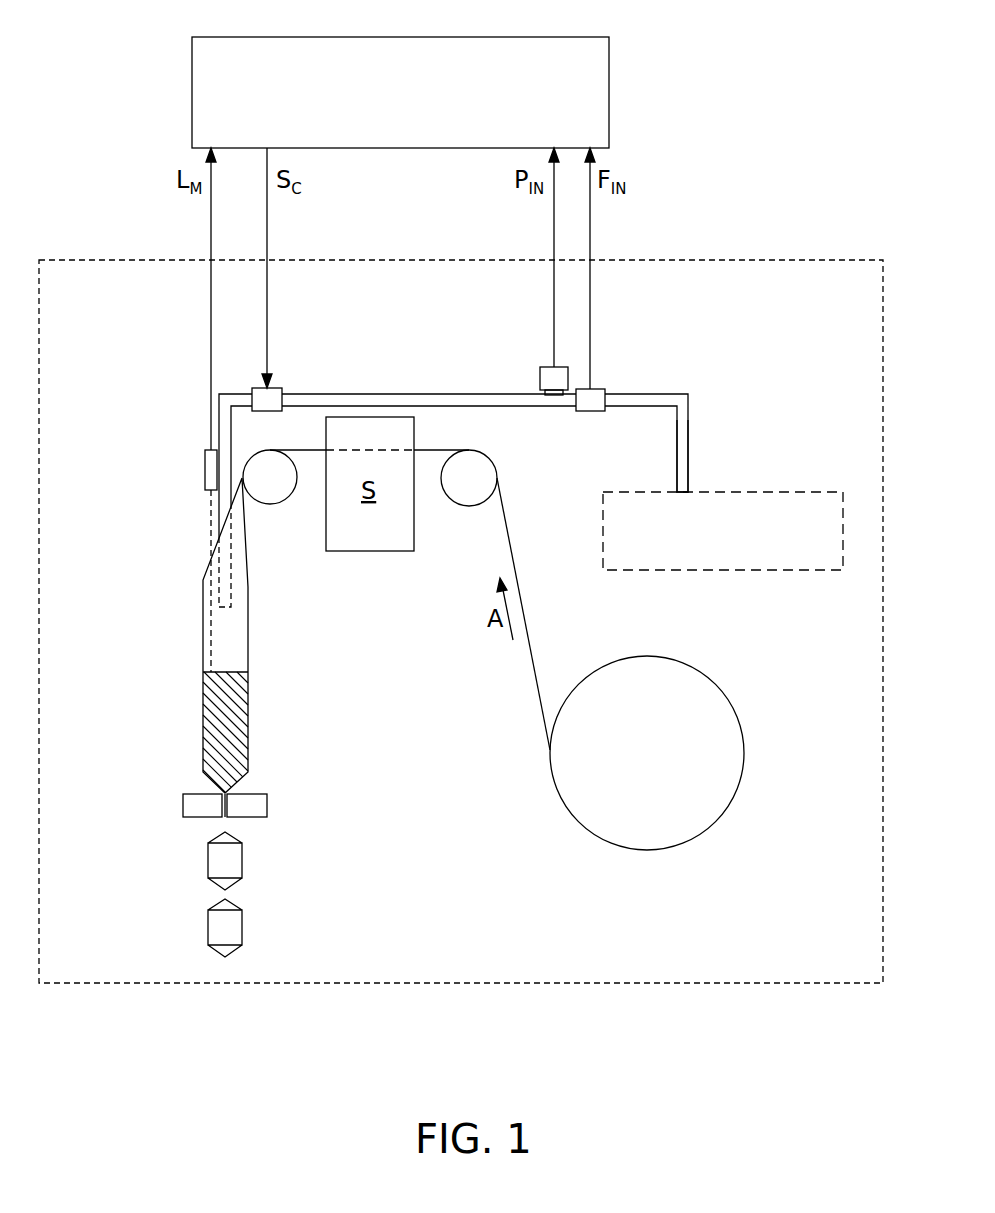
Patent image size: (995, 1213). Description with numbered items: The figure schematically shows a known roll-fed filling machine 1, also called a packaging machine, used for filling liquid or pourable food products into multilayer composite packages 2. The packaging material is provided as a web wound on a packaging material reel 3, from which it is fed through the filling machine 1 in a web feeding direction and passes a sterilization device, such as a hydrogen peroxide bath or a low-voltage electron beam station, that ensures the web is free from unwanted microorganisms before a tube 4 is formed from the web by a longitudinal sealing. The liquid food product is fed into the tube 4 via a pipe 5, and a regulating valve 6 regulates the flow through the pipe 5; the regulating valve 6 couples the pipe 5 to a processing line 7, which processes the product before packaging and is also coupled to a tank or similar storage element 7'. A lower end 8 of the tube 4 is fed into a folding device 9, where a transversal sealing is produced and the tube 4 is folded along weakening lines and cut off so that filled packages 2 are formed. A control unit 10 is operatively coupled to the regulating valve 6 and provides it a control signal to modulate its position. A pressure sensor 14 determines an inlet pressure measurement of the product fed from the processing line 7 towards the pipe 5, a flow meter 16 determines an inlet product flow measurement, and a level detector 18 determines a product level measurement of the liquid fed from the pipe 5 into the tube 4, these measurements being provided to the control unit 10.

The filling machine 1 is at (101, 92).
The multilayer composite packages 2 is at (233, 927).
The packaging material reel 3 is at (722, 795).
The tube 4 is at (233, 652).
The pipe 5 is at (223, 432).
The regulating valve 6 is at (272, 398).
The processing line 7 is at (712, 454).
The tank or storage element 7' is at (723, 555).
The lower end of the tube 8 is at (228, 708).
The folding device 9 is at (258, 805).
The control unit 10 is at (592, 92).
The pressure sensor 14 is at (545, 378).
The flow meter 16 is at (587, 402).
The level detector 18 is at (205, 470).